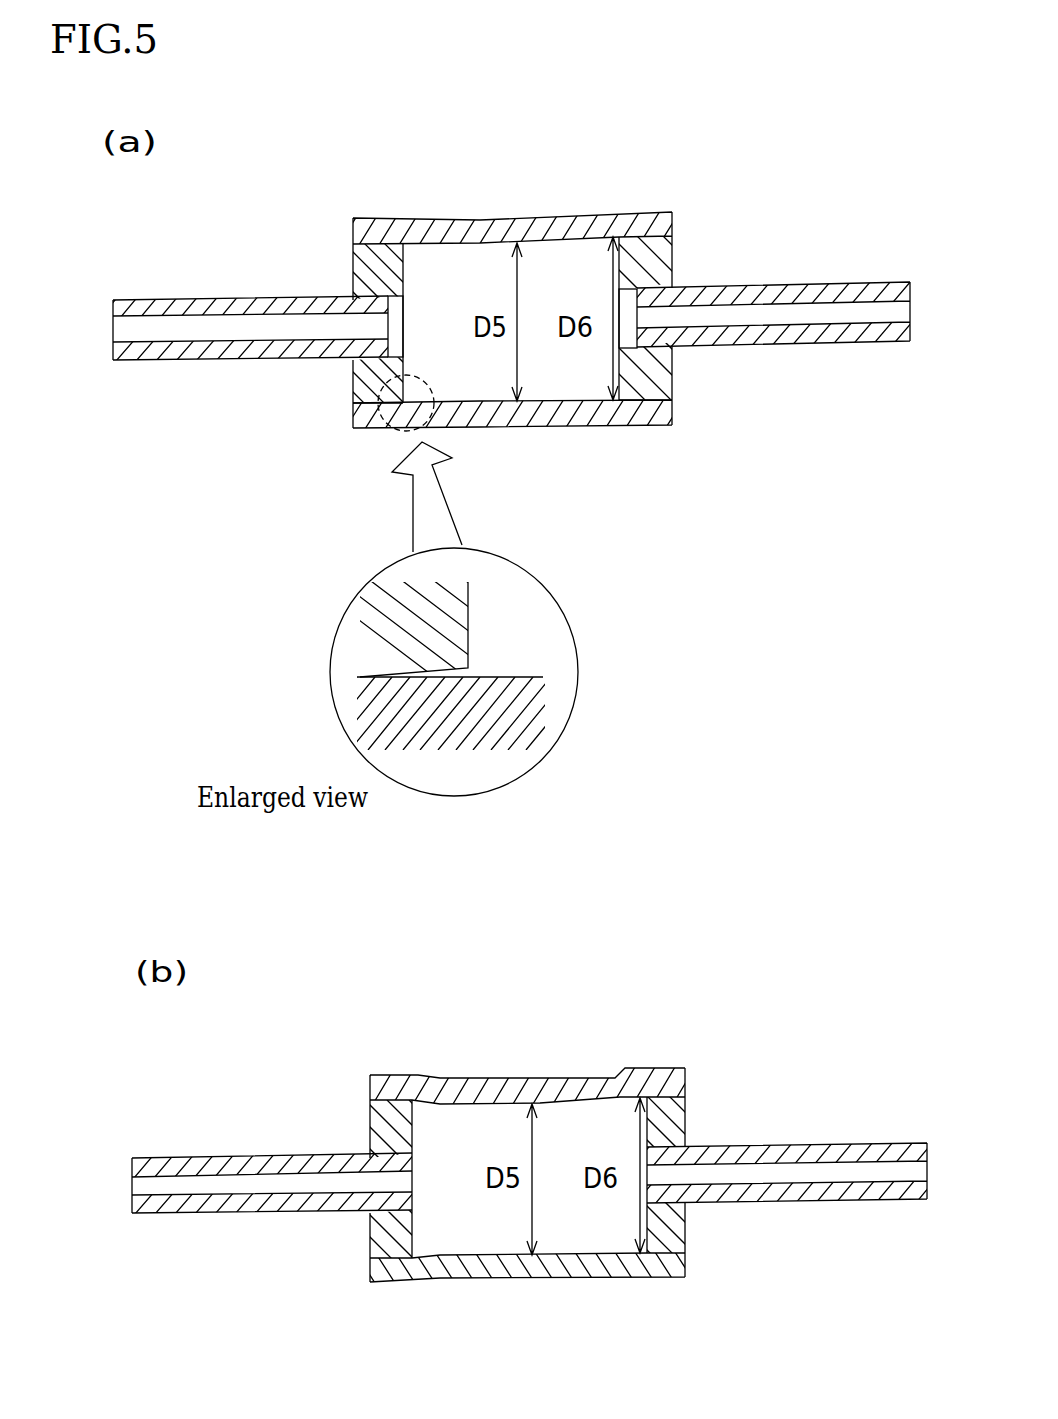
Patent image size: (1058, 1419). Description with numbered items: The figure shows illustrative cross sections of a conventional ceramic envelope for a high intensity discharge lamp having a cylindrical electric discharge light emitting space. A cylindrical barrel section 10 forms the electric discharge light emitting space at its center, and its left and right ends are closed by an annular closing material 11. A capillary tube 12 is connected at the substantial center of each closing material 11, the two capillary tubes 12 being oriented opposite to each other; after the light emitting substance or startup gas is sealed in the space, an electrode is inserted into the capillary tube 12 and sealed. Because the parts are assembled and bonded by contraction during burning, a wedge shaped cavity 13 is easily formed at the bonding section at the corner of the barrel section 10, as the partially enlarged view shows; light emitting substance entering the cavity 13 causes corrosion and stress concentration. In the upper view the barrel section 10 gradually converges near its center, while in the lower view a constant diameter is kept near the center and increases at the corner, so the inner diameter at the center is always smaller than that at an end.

The barrel section 10 is at (482, 218).
The closing material 11 is at (348, 263).
The capillary tube 12 is at (215, 296).
The cavity 13 is at (472, 672).